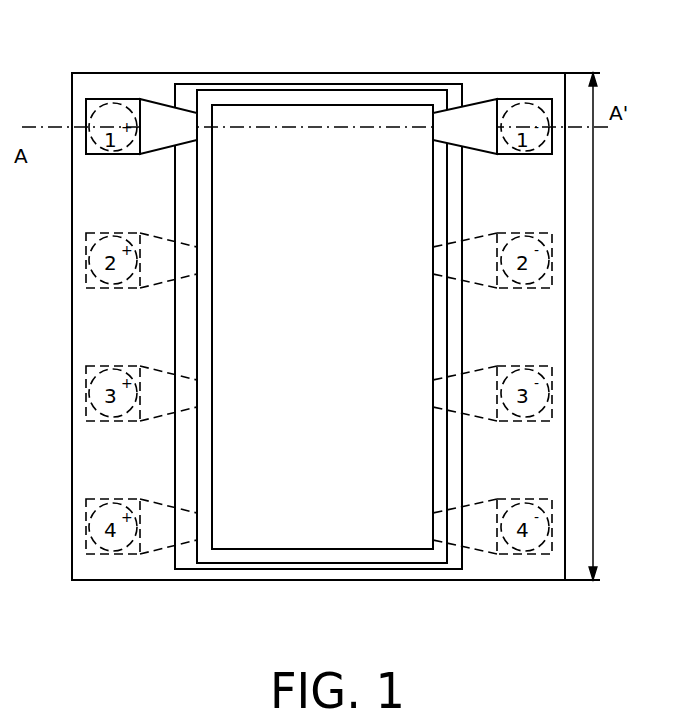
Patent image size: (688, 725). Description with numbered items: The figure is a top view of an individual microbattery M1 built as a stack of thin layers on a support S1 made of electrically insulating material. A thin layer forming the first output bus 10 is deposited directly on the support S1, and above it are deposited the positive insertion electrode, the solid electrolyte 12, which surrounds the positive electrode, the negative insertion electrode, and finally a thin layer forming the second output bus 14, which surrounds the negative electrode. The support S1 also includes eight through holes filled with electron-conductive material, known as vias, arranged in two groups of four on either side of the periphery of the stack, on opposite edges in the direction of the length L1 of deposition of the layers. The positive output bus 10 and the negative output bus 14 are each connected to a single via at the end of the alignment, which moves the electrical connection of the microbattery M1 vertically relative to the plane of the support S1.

The first output bus 10 is at (157, 113).
The solid electrolyte 12 is at (397, 568).
The second output bus 14 is at (480, 113).
The support S1 is at (283, 84).
The microbattery M1 is at (365, 153).
The length of deposition L1 is at (595, 326).